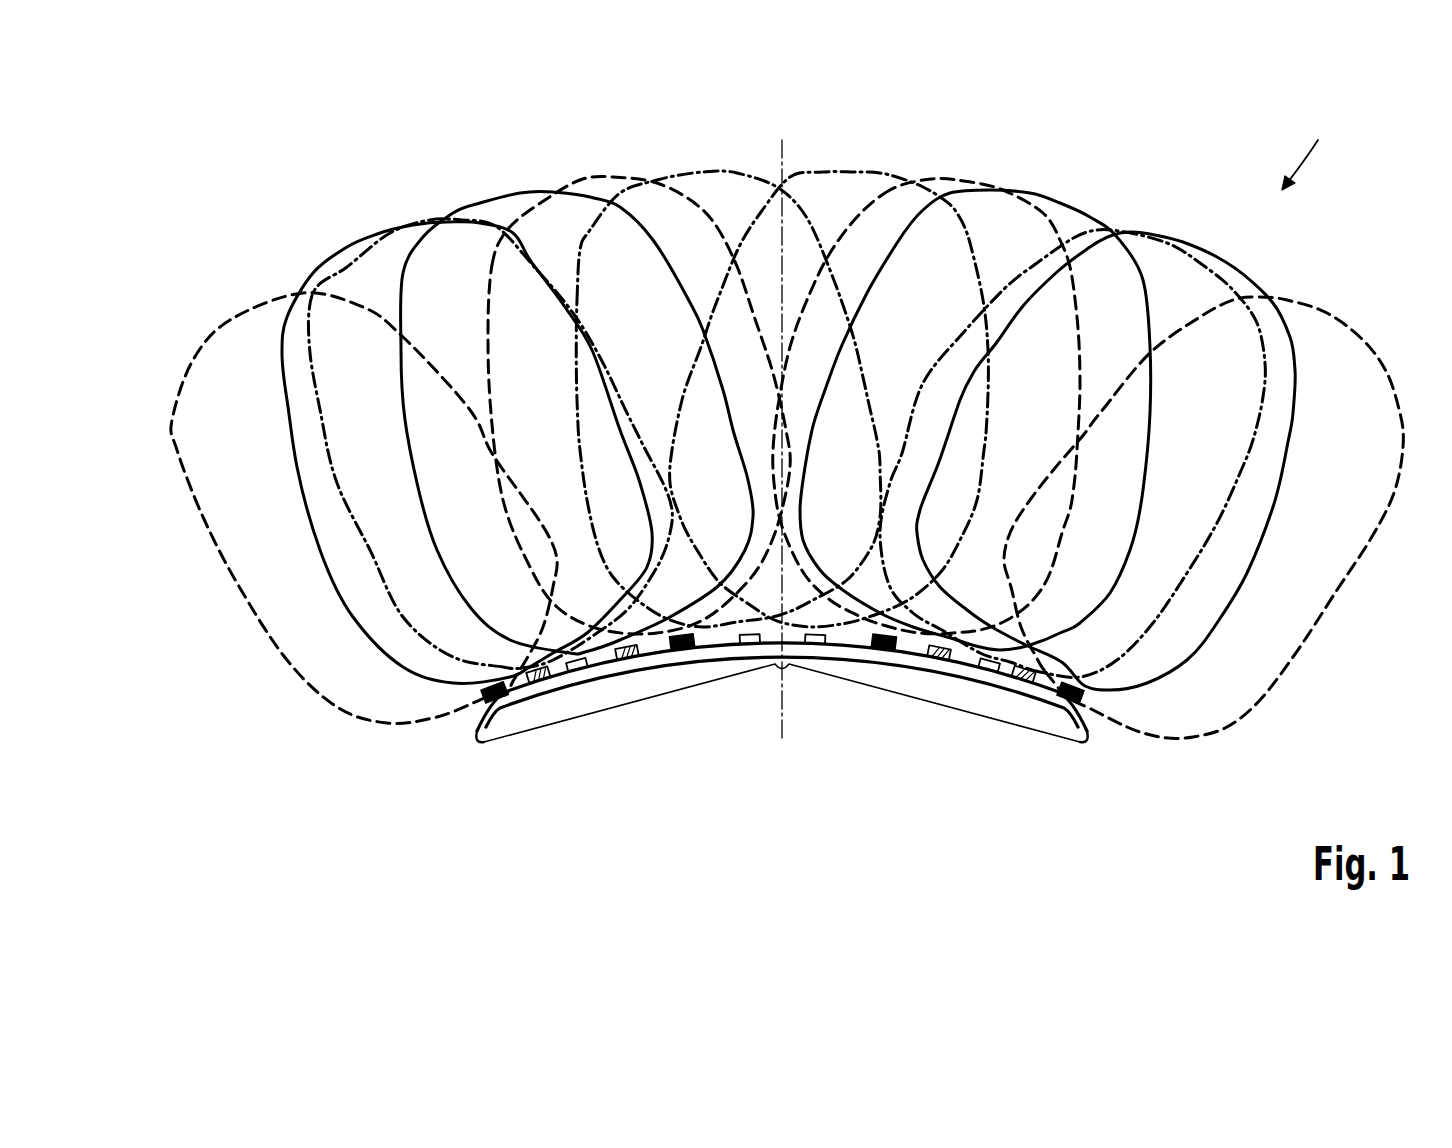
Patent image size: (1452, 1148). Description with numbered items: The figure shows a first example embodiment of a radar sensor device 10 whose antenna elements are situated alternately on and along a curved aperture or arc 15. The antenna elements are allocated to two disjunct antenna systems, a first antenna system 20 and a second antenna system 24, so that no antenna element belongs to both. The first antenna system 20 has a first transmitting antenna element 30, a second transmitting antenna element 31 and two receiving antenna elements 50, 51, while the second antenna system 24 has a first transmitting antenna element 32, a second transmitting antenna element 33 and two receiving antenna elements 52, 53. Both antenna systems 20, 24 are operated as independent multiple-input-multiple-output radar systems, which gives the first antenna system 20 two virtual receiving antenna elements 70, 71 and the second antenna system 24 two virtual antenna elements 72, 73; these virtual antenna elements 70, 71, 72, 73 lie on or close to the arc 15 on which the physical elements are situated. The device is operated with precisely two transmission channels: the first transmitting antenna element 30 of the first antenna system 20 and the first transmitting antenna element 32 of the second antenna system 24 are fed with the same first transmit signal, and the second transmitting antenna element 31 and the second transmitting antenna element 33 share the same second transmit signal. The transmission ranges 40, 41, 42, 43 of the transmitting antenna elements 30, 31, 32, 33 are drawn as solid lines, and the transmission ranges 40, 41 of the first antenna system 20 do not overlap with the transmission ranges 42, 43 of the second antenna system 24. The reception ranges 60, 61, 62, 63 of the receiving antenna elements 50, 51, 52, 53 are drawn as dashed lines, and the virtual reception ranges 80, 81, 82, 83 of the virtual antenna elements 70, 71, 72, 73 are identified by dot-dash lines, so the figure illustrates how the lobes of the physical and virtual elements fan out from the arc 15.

The radar sensor device 10 is at (1311, 149).
The arc 15 is at (1083, 733).
The first antenna system 20 is at (659, 703).
The second antenna system 24 is at (905, 703).
The first transmitting antenna element 30 is at (548, 684).
The second transmitting antenna element 31 is at (630, 658).
The first transmitting antenna element 32 is at (937, 658).
The second transmitting antenna element 33 is at (1013, 687).
The transmission range 40 is at (338, 256).
The transmission range 41 is at (510, 195).
The transmission range 42 is at (1043, 193).
The transmission range 43 is at (1200, 247).
The receiving antenna element 50 is at (509, 712).
The receiving antenna element 51 is at (690, 648).
The receiving antenna element 52 is at (874, 648).
The receiving antenna element 53 is at (1054, 712).
The reception range 60 is at (195, 358).
The reception range 61 is at (590, 173).
The reception range 62 is at (974, 173).
The reception range 63 is at (1377, 357).
The virtual receiving antenna element 70 is at (585, 669).
The virtual receiving antenna element 71 is at (751, 644).
The virtual antenna element 72 is at (814, 644).
The virtual antenna element 73 is at (985, 670).
The virtual reception range 80 is at (423, 217).
The virtual reception range 81 is at (690, 172).
The virtual reception range 82 is at (874, 172).
The virtual reception range 83 is at (1124, 229).